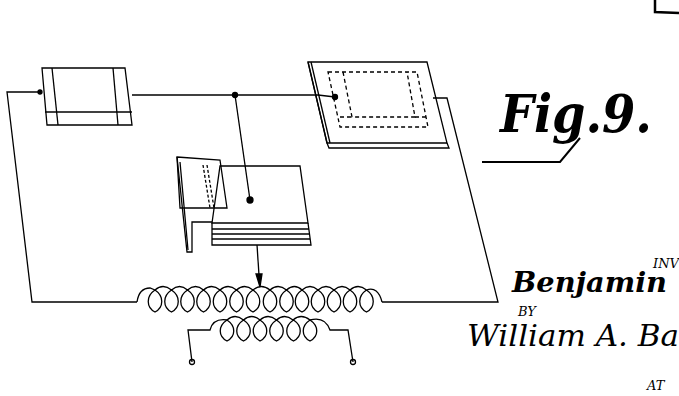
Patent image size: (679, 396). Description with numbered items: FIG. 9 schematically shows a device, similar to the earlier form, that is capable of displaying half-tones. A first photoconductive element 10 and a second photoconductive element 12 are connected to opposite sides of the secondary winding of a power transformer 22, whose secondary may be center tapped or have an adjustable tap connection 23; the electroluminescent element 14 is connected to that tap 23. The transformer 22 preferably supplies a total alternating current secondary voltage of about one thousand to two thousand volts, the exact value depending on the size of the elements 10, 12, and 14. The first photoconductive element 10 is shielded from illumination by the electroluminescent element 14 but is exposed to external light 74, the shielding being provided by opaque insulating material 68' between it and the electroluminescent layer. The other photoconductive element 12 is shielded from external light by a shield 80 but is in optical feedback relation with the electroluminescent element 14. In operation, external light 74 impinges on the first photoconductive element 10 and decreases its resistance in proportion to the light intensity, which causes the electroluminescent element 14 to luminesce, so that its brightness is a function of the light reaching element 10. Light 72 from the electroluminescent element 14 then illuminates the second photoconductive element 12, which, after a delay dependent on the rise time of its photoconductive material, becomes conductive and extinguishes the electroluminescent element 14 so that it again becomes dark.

The first photoconductive element 10 is at (113, 127).
The second photoconductive element 12 is at (418, 80).
The electroluminescent element 14 is at (312, 236).
The power transformer 22 is at (202, 316).
The tap connection 23 is at (262, 260).
The opaque insulating material 68' is at (170, 204).
The light from electroluminescent element 72 is at (307, 205).
The external light 74 is at (92, 75).
The shield 80 is at (308, 70).